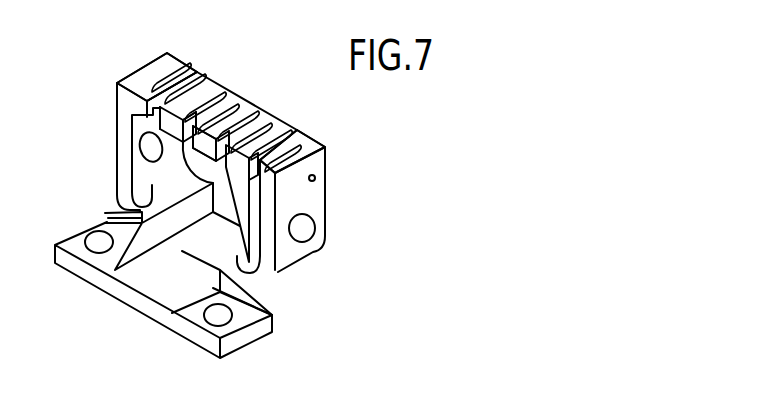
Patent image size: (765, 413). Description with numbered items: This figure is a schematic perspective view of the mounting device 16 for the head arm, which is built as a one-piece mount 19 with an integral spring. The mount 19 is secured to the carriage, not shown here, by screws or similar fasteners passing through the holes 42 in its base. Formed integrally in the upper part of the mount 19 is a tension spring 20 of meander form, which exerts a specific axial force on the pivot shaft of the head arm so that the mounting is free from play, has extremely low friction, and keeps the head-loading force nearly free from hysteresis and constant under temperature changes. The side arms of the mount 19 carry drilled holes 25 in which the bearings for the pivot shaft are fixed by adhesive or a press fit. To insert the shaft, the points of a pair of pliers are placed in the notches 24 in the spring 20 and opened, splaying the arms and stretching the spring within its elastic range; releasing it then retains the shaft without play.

The mounting device 16 is at (337, 216).
The mount 19 is at (315, 176).
The tension spring 20 is at (228, 99).
The notches 24 is at (155, 83).
The holes 25 is at (303, 229).
The holes 42 is at (213, 314).